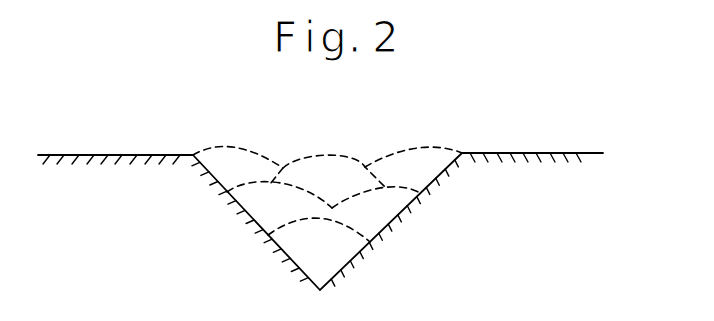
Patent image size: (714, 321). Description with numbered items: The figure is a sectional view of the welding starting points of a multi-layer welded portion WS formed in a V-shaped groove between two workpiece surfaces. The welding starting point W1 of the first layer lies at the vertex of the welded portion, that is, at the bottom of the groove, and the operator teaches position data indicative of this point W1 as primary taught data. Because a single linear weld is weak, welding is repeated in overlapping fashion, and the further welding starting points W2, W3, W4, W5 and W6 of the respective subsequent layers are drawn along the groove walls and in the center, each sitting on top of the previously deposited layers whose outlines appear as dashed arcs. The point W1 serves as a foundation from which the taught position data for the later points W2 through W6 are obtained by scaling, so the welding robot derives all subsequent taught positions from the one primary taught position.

The weld seam WS is at (436, 131).
The welding starting point of the first layer W1 is at (319, 269).
The welding starting point W2 is at (279, 226).
The welding starting point W3 is at (376, 229).
The welding starting point W4 is at (334, 180).
The welding starting point W5 is at (238, 184).
The welding starting point W6 is at (413, 184).